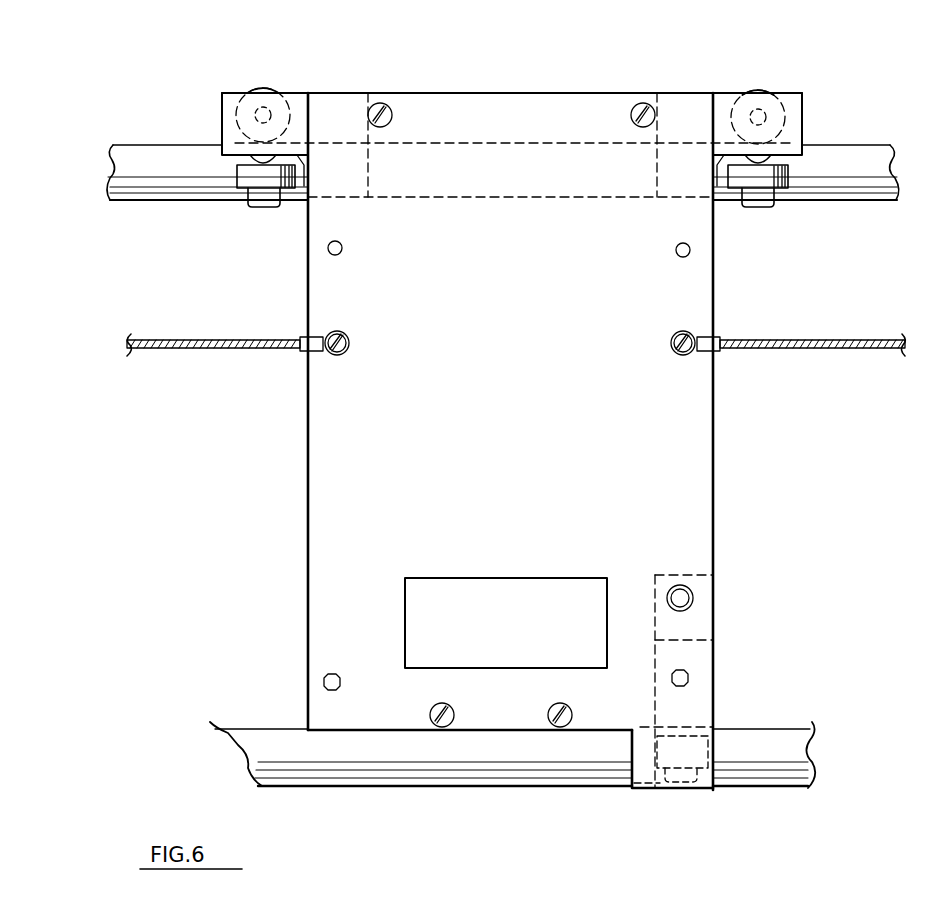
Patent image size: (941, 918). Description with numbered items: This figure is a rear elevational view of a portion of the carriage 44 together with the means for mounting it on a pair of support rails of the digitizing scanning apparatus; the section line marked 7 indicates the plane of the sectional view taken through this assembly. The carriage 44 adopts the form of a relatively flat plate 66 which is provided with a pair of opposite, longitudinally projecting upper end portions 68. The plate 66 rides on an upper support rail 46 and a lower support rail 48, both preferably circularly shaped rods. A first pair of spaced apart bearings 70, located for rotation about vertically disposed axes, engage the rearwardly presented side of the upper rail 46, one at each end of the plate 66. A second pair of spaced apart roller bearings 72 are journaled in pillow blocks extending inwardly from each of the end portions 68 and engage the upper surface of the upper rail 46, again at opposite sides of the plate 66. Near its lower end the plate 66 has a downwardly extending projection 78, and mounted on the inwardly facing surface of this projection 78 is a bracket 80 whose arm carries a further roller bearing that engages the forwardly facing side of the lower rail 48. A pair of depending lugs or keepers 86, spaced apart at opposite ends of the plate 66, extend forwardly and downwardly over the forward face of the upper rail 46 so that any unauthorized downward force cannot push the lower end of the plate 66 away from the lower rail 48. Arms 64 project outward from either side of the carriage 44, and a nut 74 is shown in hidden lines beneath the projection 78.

The section line 7- 7 is at (183, 230).
The carriage 44 is at (745, 433).
The upper support rail 46 is at (868, 180).
The lower support rail 48 is at (777, 742).
The support arm 64 is at (162, 346).
The flat plate 66 is at (338, 432).
The upper end portions 68 is at (228, 130).
The bearings 70 is at (263, 178).
The roller bearings 72 is at (266, 88).
The lower adjusting nut 74 is at (685, 755).
The downwardly extending projection 78 is at (648, 767).
The bracket 80 is at (690, 662).
The depending lugs (keepers) 86 is at (333, 180).